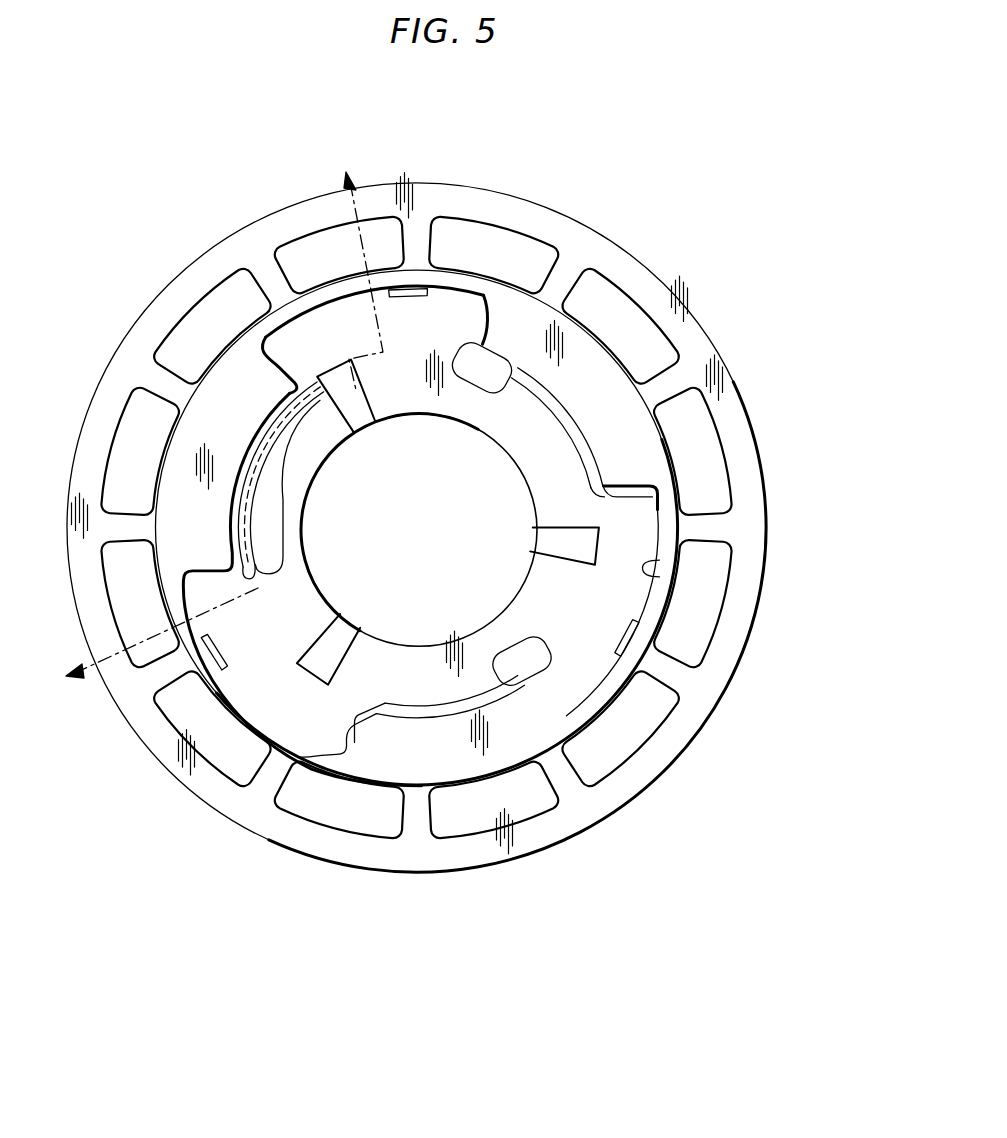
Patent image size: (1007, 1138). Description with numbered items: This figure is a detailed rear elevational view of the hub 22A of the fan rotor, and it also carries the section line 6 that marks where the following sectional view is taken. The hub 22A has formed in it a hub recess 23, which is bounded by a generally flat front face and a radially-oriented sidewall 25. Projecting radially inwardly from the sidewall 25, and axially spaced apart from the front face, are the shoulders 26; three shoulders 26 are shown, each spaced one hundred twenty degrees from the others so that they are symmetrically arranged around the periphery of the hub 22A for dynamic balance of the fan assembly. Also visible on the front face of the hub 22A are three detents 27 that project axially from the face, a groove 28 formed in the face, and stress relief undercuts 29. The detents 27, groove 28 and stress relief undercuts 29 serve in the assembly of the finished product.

The section line 6- 6 is at (212, 417).
The hub 22A is at (531, 903).
The hub recess 23 is at (242, 648).
The sidewall 25 is at (655, 566).
The shoulders 26 is at (227, 390).
The detents 27 is at (352, 392).
The groove 28 is at (275, 502).
The stress relief undercuts 29 is at (483, 358).